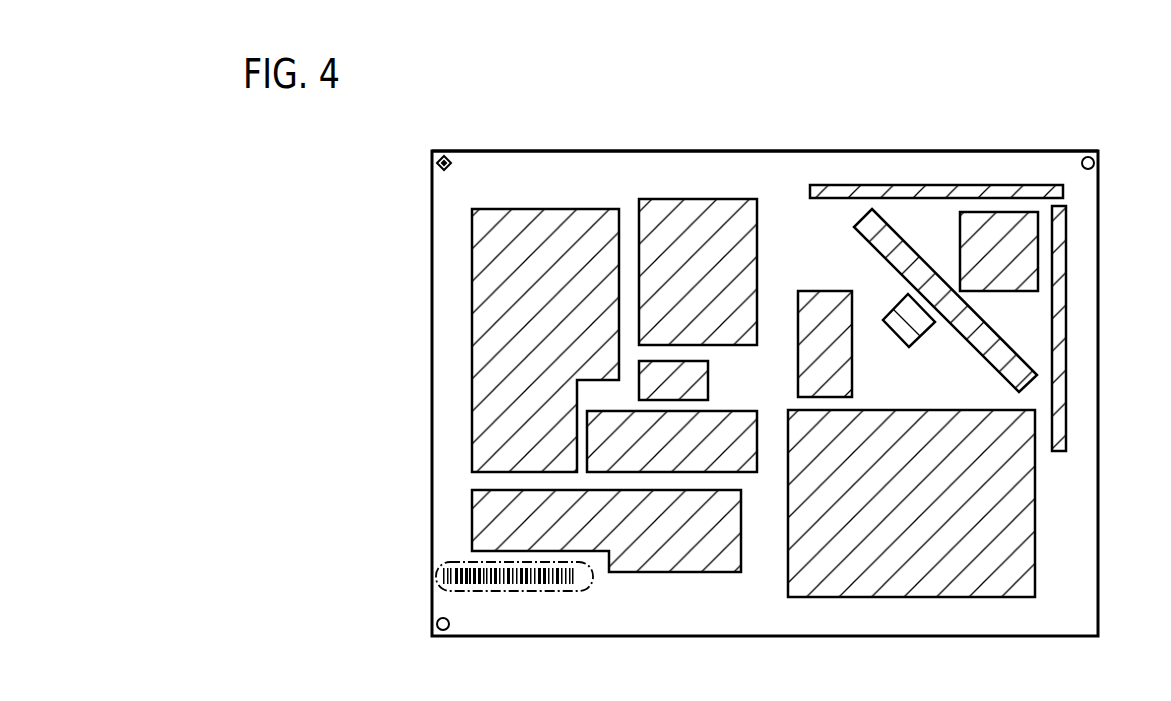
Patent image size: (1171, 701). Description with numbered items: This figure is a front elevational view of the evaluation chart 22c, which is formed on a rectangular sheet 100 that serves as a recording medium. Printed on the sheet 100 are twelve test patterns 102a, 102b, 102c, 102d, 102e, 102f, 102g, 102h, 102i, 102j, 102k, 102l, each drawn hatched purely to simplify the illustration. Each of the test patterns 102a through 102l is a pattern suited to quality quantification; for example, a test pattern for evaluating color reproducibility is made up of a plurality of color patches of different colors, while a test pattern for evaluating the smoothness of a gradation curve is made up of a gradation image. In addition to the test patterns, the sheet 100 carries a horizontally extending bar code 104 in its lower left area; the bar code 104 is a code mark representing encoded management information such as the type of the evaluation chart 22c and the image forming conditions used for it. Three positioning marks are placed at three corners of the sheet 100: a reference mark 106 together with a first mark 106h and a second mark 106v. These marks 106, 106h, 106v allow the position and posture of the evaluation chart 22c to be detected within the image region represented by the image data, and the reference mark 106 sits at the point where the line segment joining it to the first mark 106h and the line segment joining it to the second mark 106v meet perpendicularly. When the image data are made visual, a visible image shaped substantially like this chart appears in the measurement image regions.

The sheet 100 is at (915, 157).
The evaluation chart 22c is at (799, 152).
The test pattern 102a is at (518, 219).
The test pattern 102b is at (667, 207).
The test pattern 102c is at (694, 368).
The test pattern 102d is at (720, 417).
The test pattern 102e is at (670, 563).
The test pattern 102f is at (836, 194).
The test pattern 102g is at (1067, 284).
The test pattern 102h is at (965, 247).
The test pattern 102i is at (888, 243).
The test pattern 102j is at (923, 324).
The test pattern 102k is at (840, 350).
The test pattern 102l is at (1017, 527).
The bar code 104 is at (527, 592).
The reference mark 106 is at (448, 158).
The first mark 106h is at (1090, 155).
The second mark 106v is at (444, 631).